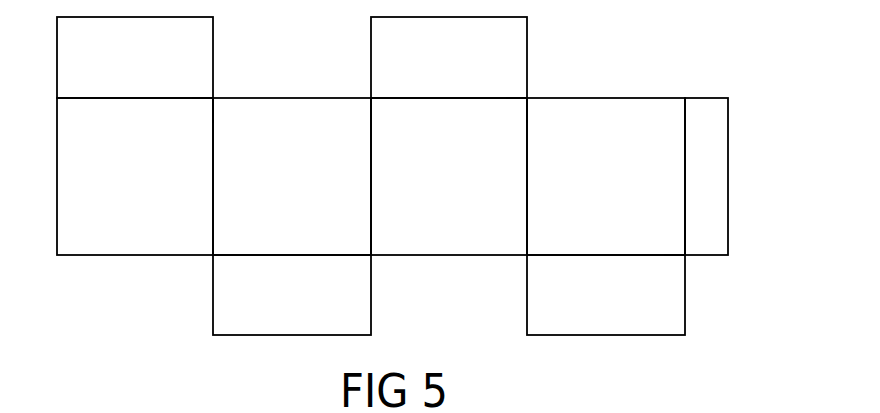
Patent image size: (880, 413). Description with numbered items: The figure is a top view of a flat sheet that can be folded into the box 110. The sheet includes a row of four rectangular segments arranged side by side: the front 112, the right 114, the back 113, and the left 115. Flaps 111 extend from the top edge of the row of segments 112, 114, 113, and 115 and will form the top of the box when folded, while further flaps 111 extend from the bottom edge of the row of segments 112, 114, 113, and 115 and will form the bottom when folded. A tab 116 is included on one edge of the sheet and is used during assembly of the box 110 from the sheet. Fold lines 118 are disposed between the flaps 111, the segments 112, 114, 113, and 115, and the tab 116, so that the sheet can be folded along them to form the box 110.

The box 110 is at (414, 193).
The flaps 111 is at (113, 69).
The front segment 112 is at (113, 188).
The back segment 113 is at (426, 188).
The right segment 114 is at (266, 188).
The left segment 115 is at (585, 188).
The tab 116 is at (702, 115).
The fold lines 118 is at (215, 123).